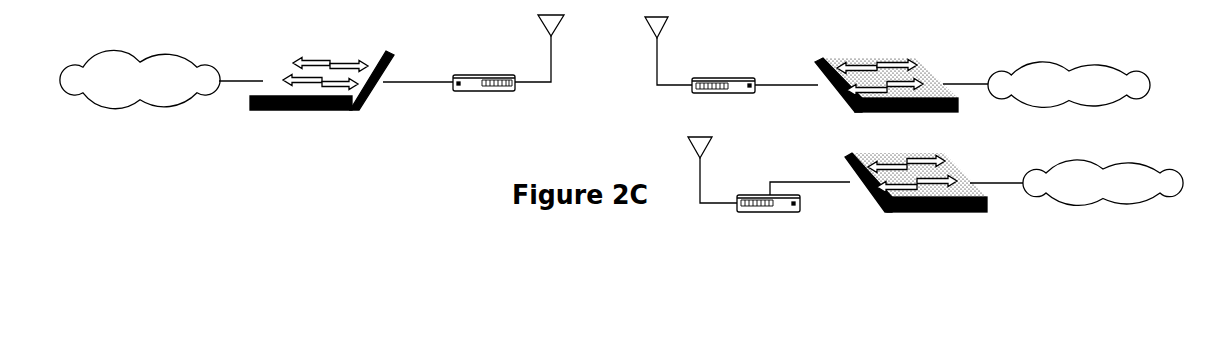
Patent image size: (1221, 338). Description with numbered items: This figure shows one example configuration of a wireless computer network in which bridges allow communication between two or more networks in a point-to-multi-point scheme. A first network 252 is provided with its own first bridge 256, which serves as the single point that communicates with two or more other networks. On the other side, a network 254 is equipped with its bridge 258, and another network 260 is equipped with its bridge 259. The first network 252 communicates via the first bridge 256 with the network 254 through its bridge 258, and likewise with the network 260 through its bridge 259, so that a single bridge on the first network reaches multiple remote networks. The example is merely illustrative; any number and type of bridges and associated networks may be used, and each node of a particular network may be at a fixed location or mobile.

The first network 252 is at (165, 50).
The network 254 is at (1057, 60).
The first bridge 256 is at (455, 91).
The bridge 258 is at (693, 92).
The bridge 259 is at (737, 209).
The network 260 is at (1128, 163).